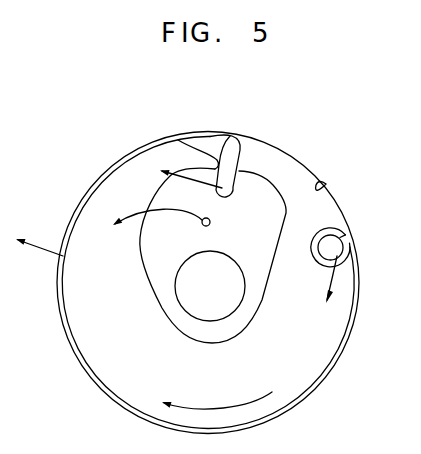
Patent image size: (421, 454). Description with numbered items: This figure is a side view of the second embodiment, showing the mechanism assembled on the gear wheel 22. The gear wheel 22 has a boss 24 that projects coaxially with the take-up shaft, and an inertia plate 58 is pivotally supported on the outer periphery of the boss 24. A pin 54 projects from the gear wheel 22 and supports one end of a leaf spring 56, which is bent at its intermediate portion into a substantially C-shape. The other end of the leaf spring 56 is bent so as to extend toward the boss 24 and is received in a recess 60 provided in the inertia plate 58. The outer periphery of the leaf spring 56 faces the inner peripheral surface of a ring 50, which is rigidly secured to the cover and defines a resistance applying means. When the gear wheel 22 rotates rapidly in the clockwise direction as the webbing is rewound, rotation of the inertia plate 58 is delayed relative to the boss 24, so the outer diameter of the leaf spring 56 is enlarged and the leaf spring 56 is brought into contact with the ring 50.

The gear wheel 22 is at (323, 357).
The boss 24 is at (221, 314).
The ring 50 is at (326, 184).
The pin 54 is at (347, 233).
The leaf spring 56 is at (361, 301).
The inertia plate 58 is at (260, 276).
The recess 60 is at (180, 143).